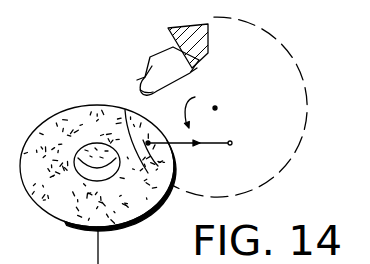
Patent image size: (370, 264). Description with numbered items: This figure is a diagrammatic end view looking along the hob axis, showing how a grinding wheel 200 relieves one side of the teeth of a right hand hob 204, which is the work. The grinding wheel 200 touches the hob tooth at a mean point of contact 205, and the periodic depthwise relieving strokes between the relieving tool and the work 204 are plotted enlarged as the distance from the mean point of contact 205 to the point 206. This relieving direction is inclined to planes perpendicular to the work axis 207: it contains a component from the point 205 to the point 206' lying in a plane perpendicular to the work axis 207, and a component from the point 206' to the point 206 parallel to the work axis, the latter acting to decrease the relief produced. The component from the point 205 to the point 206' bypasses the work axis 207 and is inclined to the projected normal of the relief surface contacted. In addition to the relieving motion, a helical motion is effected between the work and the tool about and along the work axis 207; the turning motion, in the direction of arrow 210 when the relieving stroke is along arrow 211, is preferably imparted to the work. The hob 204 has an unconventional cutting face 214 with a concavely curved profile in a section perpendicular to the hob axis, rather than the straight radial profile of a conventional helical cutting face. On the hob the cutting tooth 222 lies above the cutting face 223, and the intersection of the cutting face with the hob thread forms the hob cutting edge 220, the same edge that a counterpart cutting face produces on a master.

The grinding wheel 200 is at (62, 208).
The right hand hob 204 is at (136, 80).
The mean point of contact 205 is at (171, 166).
The end point of relieving stroke 206 is at (217, 135).
The intermediate point of relieving stroke 206' is at (261, 107).
The work axis 207 is at (215, 108).
The arrow of turning motion 210 is at (208, 103).
The arrow of relieving stroke 211 is at (200, 147).
The cutting face 214 is at (178, 43).
The hob cutting edge 220 is at (144, 76).
The cutting tooth 222 is at (197, 68).
The cutting face 223 is at (140, 89).